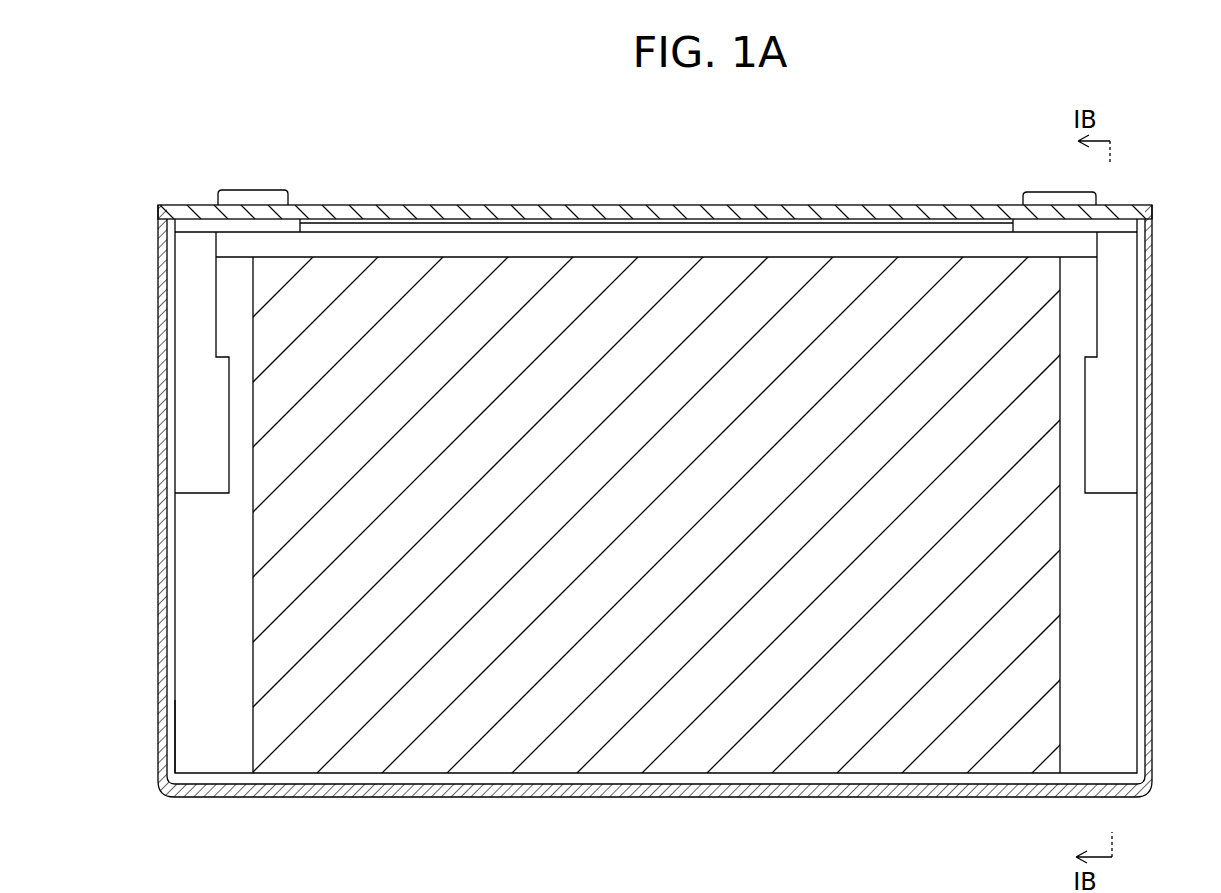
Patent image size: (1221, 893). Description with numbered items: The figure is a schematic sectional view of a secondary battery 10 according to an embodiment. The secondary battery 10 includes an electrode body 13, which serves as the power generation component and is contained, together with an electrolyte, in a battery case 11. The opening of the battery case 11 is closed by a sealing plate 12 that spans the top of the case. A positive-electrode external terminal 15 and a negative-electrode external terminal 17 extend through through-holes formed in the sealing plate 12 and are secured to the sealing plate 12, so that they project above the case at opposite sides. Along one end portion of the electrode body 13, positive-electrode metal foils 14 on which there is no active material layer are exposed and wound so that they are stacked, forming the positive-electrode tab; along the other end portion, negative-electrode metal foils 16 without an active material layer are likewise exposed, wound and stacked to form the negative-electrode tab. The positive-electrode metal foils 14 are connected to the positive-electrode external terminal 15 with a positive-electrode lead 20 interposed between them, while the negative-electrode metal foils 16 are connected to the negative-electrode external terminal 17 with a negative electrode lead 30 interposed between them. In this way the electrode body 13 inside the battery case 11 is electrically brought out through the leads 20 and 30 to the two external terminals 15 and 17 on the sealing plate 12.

The secondary battery 10 is at (883, 164).
The battery case 11 is at (160, 620).
The sealing plate 12 is at (572, 205).
The electrode body 13 is at (812, 765).
The positive-electrode metal foils 14 is at (1118, 626).
The positive-electrode external terminal 15 is at (1025, 192).
The negative-electrode metal foils 16 is at (187, 705).
The negative-electrode external terminal 17 is at (243, 190).
The positive-electrode lead 20 is at (1120, 452).
The negative electrode lead 30 is at (197, 412).